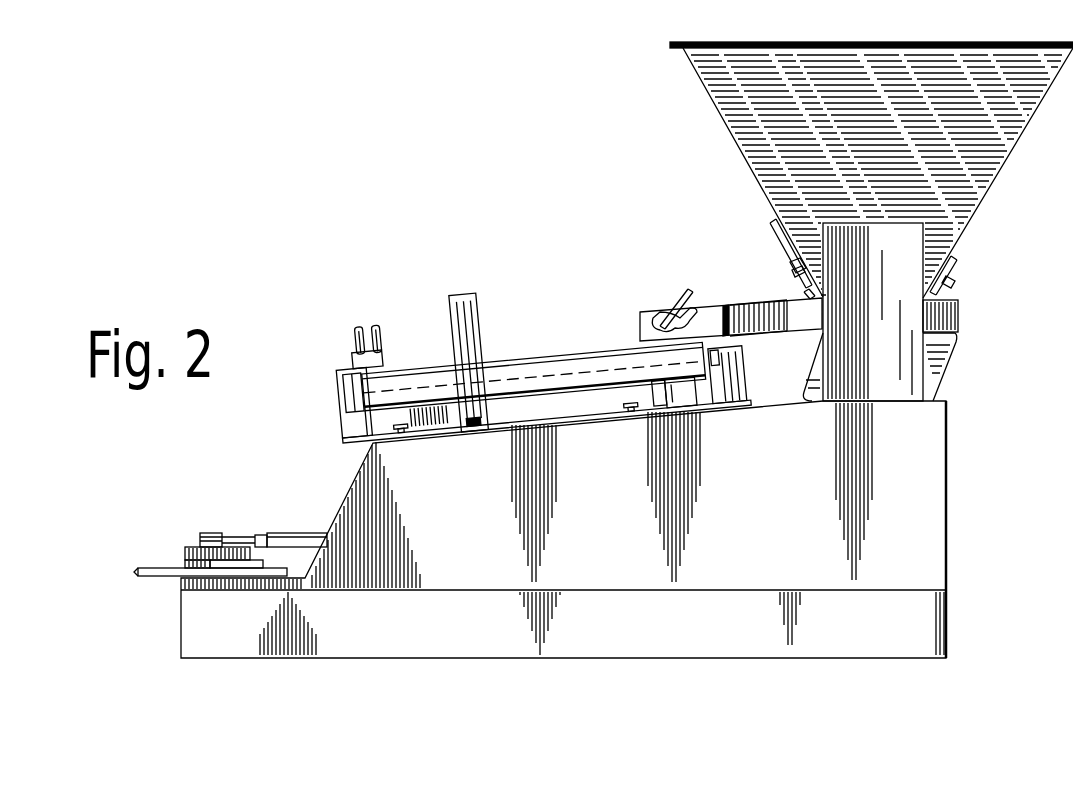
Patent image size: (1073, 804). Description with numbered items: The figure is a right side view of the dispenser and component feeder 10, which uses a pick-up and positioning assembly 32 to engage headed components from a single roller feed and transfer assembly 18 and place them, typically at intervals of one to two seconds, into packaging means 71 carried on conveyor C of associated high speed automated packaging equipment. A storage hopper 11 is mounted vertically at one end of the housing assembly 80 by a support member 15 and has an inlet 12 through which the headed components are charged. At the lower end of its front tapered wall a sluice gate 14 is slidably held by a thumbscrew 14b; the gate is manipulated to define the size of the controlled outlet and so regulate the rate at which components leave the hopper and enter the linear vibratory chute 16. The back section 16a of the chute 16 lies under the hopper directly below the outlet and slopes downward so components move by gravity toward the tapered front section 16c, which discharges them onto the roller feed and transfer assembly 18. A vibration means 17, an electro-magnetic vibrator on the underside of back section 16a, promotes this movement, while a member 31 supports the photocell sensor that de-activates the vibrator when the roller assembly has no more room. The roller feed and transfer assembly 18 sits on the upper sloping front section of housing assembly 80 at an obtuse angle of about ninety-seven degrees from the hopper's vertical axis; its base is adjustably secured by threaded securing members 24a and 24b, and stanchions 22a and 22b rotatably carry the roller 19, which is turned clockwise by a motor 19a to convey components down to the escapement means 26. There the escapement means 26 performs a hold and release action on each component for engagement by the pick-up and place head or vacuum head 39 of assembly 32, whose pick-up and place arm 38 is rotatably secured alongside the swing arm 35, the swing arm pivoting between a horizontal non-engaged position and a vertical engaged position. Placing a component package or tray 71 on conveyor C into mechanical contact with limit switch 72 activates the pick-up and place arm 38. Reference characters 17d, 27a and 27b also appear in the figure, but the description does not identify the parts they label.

The dispenser and component feeder 10 is at (548, 260).
The storage hopper 11 is at (1009, 62).
The inlet 12 is at (886, 38).
The sluice gate 14 is at (778, 222).
The thumbscrew 14b is at (772, 234).
The support member 15 is at (956, 264).
The linear vibratory chute 16 is at (731, 298).
The back section 16a is at (786, 306).
The tapered front section 16c is at (704, 332).
The vibration means 17 is at (940, 370).
The pin 17d is at (681, 293).
The single roller feed and transfer assembly 18 is at (530, 350).
The roller 19 is at (583, 360).
The motor 19a is at (689, 400).
The stanchion 22a is at (345, 393).
The stanchion 22b is at (717, 355).
The threaded securing member 24a is at (411, 432).
The threaded securing member 24b is at (624, 410).
The escapement means 26 is at (369, 316).
The pin 27a is at (353, 330).
The pin 27b is at (378, 328).
The member 31 is at (470, 318).
The pick-up and positioning assembly 32 is at (253, 502).
The swing arm 35 is at (300, 536).
The pick-up and place arm 38 is at (250, 537).
The pick-up and place head 39 is at (213, 537).
The packaging means 71 is at (192, 550).
The limit switch 72 is at (188, 560).
The housing assembly 80 is at (940, 490).
The conveyor C is at (145, 578).